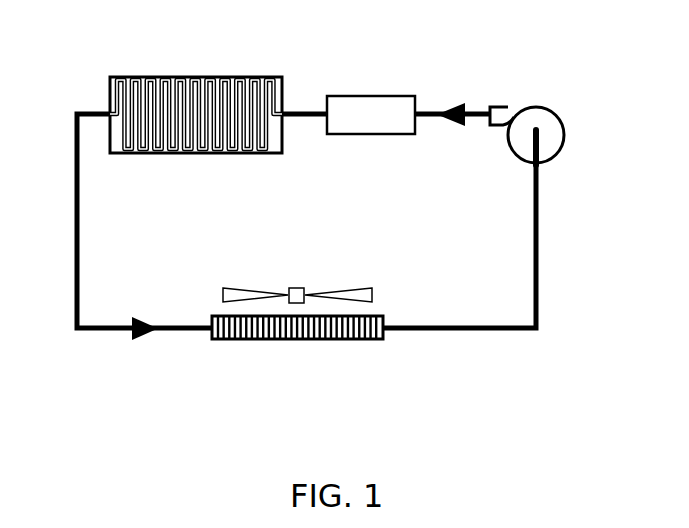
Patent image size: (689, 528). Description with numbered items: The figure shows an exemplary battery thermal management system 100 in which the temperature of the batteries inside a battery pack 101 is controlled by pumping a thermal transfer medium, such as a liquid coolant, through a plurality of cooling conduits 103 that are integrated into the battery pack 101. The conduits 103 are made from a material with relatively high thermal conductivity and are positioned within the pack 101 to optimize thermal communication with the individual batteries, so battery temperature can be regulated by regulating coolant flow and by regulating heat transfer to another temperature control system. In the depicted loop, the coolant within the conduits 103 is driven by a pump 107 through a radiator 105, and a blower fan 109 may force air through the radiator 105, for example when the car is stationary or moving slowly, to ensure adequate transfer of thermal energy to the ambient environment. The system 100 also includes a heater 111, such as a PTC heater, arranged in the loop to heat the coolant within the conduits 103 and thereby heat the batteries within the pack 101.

The battery thermal management system 100 is at (566, 63).
The battery pack 101 is at (180, 77).
The cooling conduits 103 is at (136, 95).
The radiator 105 is at (257, 340).
The pump 107 is at (512, 122).
The blower fan 109 is at (300, 287).
The heater 111 is at (358, 96).